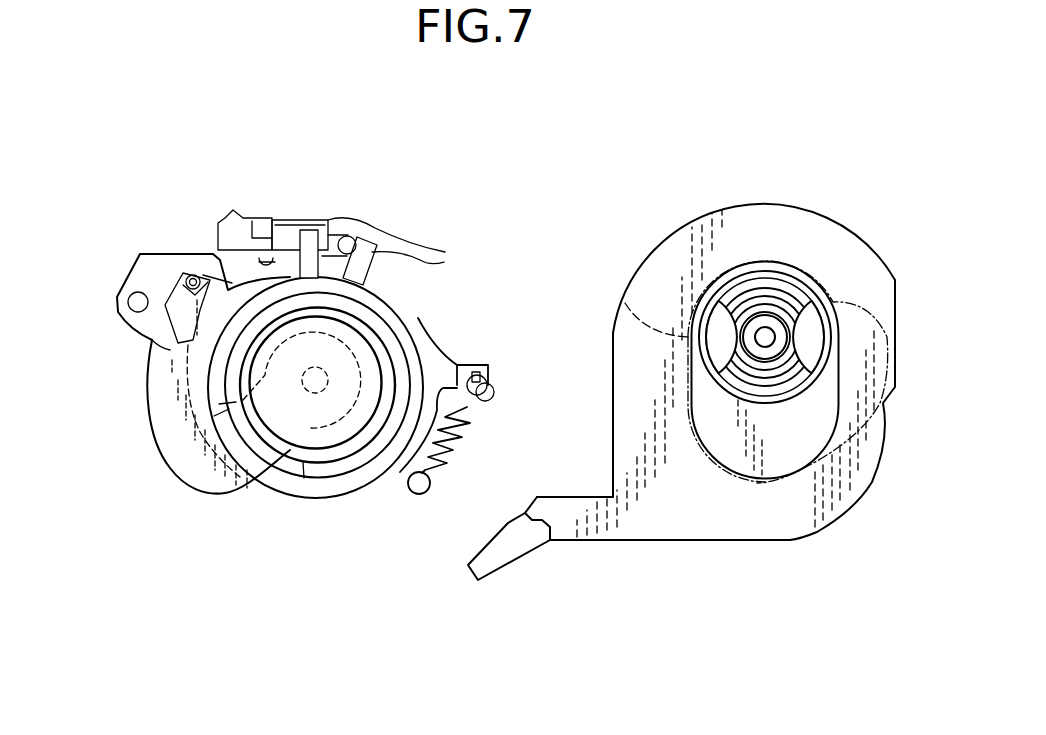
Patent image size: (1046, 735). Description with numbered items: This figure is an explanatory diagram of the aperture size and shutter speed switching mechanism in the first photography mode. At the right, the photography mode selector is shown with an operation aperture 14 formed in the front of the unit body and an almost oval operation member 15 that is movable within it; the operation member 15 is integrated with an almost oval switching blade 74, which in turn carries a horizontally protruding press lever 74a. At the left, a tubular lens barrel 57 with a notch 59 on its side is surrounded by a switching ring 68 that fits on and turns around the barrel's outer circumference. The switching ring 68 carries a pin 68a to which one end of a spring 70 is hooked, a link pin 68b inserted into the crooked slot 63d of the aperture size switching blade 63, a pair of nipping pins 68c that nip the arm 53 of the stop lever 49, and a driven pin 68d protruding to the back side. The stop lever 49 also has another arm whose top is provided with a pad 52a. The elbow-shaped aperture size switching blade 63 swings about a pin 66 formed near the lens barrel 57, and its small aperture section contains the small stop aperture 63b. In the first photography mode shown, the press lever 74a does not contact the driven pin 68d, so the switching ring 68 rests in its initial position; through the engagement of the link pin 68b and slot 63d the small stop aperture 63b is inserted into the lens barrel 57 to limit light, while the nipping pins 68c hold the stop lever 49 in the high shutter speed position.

The operation aperture 14 is at (625, 303).
The operation member 15 is at (771, 517).
The stop lever 49 is at (305, 220).
The pad 52a is at (232, 210).
The arm 53 is at (330, 226).
The lens barrel 57 is at (400, 337).
The notch 59 is at (285, 472).
The aperture size switching blade 63 is at (163, 457).
The small stop aperture 63b is at (313, 393).
The slot 63d is at (155, 340).
The pin 66 is at (128, 300).
The switching ring 68 is at (358, 493).
The pin 68a is at (480, 372).
The link pin 68b is at (190, 276).
The nipping pins 68c is at (408, 247).
The driven pin 68d is at (494, 393).
The spring 70 is at (453, 450).
The switching blade 74 is at (850, 502).
The press lever 74a is at (498, 558).